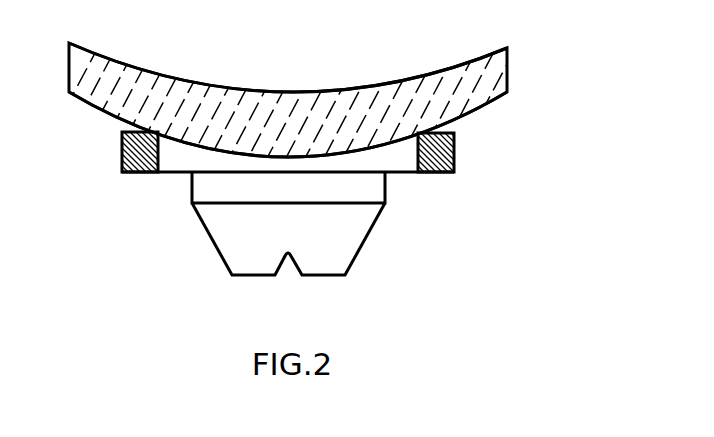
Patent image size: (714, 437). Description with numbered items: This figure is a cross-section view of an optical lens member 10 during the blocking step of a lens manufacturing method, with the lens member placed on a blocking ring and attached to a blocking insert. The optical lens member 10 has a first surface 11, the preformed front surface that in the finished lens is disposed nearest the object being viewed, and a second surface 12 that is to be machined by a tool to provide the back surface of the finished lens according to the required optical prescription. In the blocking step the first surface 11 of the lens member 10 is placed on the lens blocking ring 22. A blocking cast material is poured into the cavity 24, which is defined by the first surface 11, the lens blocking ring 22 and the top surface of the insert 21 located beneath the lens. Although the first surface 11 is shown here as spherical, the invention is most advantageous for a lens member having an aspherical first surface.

The optical lens member 10 is at (508, 68).
The first surface 11 is at (490, 101).
The second surface 12 is at (430, 70).
The insert 21 is at (342, 230).
The lens blocking ring 22 is at (443, 157).
The cavity 24 is at (180, 153).